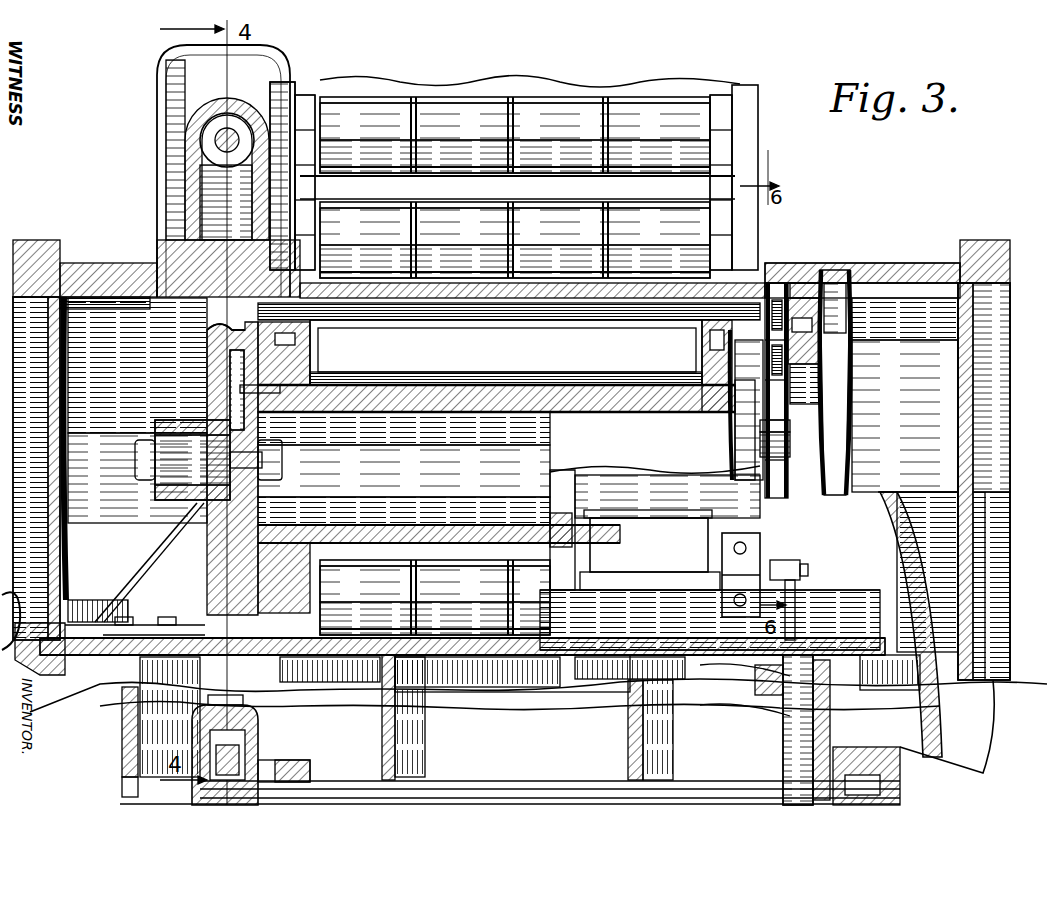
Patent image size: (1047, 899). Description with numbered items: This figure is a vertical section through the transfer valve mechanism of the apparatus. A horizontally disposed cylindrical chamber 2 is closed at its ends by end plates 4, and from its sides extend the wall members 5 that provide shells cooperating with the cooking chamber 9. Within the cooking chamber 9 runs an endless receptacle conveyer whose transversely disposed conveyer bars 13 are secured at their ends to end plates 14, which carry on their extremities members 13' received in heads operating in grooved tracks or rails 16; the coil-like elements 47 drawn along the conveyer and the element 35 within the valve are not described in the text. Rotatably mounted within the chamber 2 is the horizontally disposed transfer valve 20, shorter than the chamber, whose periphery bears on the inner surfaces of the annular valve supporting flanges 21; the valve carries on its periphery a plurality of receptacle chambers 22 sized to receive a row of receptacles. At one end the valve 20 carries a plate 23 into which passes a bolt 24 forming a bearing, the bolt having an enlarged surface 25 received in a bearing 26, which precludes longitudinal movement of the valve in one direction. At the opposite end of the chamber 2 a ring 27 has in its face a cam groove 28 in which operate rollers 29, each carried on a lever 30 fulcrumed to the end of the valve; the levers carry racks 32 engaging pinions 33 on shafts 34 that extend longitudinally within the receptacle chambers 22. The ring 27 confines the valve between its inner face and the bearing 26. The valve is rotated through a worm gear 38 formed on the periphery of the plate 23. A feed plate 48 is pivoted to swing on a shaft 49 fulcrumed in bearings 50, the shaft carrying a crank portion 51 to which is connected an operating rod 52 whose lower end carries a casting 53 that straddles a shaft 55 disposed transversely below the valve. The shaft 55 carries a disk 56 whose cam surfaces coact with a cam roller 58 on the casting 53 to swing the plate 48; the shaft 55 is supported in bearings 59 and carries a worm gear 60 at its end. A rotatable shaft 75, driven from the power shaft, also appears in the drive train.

The cylindrical chamber 2 is at (513, 410).
The end plates 4 is at (992, 395).
The wall members 5 is at (400, 668).
The cooking chamber 9 is at (927, 632).
The conveyer bars 13 is at (372, 176).
The members 13' is at (759, 182).
The end plates 14 is at (305, 190).
The grooved tracks or rails 16 is at (742, 100).
The transfer valve 20 is at (388, 398).
The annular valve supporting flanges 21 is at (748, 270).
The receptacle chambers 22 is at (545, 548).
The plate 23 is at (262, 508).
The bolt 24 is at (240, 460).
The enlarged surface 25 is at (179, 453).
The bearing 26 is at (195, 505).
The ring 27 is at (835, 278).
The cam groove 28 is at (800, 345).
The rollers 29 is at (790, 323).
The lever 30 is at (768, 390).
The racks 32 is at (790, 430).
The pinions 33 is at (790, 278).
The shafts 34 is at (622, 312).
The armature core 35 is at (521, 366).
The worm gear 38 is at (222, 326).
The coils 47 is at (515, 366).
The feed plate 48 is at (667, 523).
The shaft 49 is at (668, 575).
The bearings 50 is at (745, 578).
The crank portion 51 is at (778, 576).
The operating rod 52 is at (795, 630).
The casting 53 is at (820, 680).
The shaft 55 is at (575, 790).
The disk 56 is at (790, 748).
The cam roller 58 is at (760, 668).
The bearings 59 is at (900, 782).
The worm gear 60 is at (210, 742).
The rotatable shaft 75 is at (215, 143).